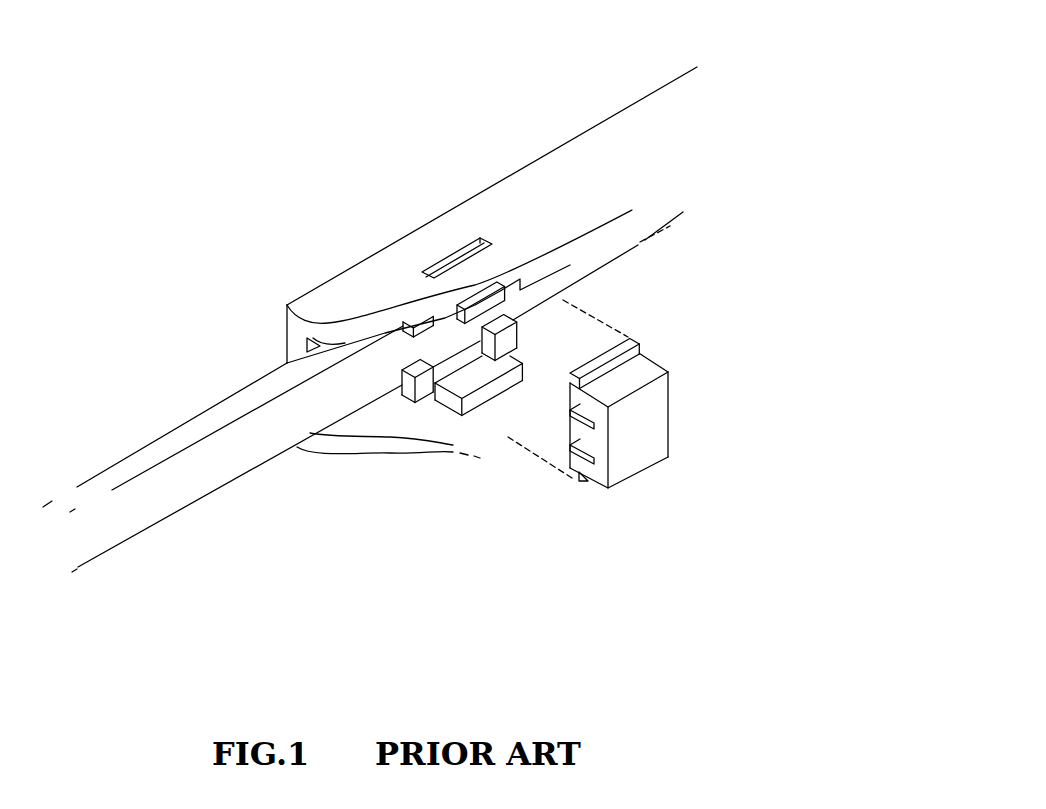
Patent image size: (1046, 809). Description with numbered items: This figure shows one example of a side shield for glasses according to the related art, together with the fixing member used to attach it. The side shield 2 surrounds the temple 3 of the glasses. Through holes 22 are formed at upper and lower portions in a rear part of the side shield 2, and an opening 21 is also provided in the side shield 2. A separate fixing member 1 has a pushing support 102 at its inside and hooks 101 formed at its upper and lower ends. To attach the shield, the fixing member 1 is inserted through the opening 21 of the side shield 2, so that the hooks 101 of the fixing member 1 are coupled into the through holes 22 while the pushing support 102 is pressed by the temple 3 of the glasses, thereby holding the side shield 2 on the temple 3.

The fixing member 1 is at (662, 430).
The side shield 2 is at (507, 193).
The temple 3 is at (163, 508).
The opening 21 is at (545, 301).
The through holes 22 is at (440, 262).
The hooks 101 is at (620, 347).
The pushing support 102 is at (575, 430).